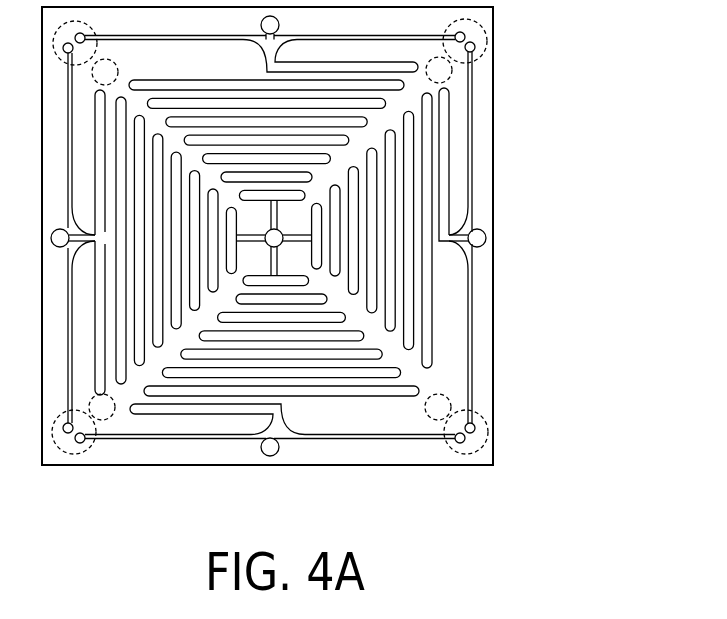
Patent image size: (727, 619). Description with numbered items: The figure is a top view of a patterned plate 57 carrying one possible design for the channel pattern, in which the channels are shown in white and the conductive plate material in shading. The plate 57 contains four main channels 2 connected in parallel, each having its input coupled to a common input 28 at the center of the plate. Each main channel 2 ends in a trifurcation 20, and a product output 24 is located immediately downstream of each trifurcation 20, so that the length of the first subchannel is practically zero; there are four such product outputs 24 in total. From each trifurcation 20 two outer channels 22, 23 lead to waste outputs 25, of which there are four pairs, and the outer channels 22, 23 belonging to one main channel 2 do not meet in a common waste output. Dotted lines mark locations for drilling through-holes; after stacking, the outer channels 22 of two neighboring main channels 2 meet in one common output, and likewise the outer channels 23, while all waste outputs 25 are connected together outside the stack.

The main channel 2 is at (166, 201).
The trifurcation 20 is at (450, 254).
The outer channel 22 is at (474, 151).
The outer channel 23 is at (474, 336).
The product output 24 is at (487, 238).
The waste output 25 is at (486, 430).
The common input 28 is at (265, 244).
The patterned plate 57 is at (550, 28).